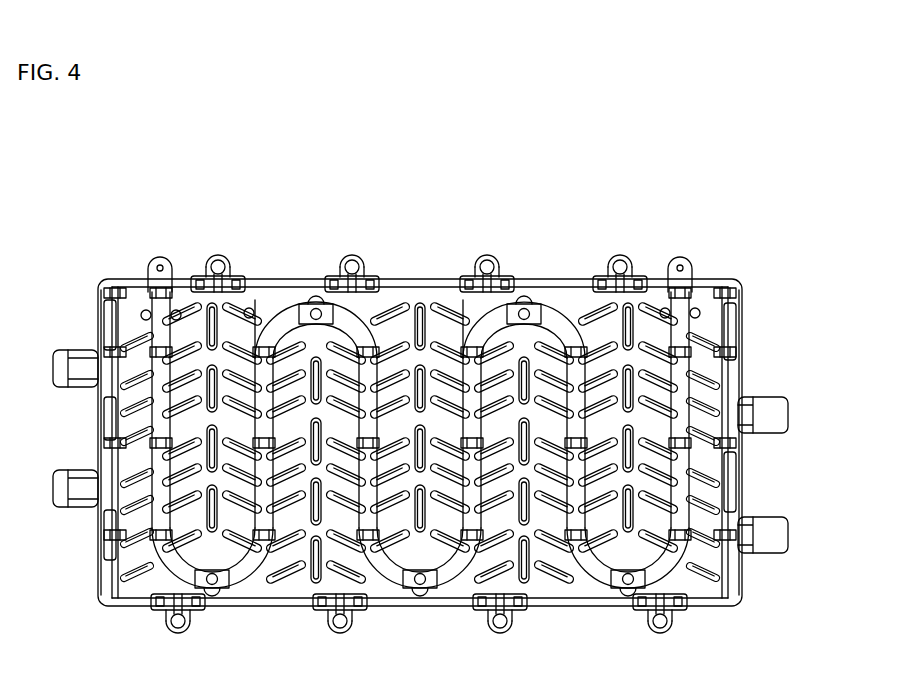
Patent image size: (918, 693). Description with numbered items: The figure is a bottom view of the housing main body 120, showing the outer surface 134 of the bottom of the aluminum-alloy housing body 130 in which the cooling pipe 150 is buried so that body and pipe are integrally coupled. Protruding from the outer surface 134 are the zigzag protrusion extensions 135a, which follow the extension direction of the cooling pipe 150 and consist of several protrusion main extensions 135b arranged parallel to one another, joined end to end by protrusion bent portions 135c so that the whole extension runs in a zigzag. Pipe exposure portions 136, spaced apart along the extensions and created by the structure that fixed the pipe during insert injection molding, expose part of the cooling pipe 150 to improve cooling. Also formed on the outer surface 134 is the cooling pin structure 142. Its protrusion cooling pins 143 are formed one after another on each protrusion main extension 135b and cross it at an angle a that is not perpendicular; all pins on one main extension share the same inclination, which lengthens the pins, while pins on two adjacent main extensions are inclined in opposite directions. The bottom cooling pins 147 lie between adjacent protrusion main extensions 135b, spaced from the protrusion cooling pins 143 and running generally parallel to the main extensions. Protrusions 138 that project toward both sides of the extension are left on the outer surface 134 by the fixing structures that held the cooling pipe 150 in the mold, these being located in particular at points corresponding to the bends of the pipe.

The housing main body 120 is at (513, 248).
The housing body 130 is at (735, 282).
The outer surface 134 is at (402, 293).
The zigzag protrusion extensions 135a is at (148, 312).
The protrusion main extensions 135b is at (262, 367).
The protrusion bent portions 135c is at (552, 313).
The pipe exposure portions 136 is at (700, 448).
The protrusions 138 is at (613, 562).
The cooling pin structure 142 is at (108, 522).
The protrusion cooling pins 143 is at (383, 378).
The bottom cooling pins 147 is at (418, 295).
The cooling pipe 150 is at (717, 353).
The angle a is at (361, 433).